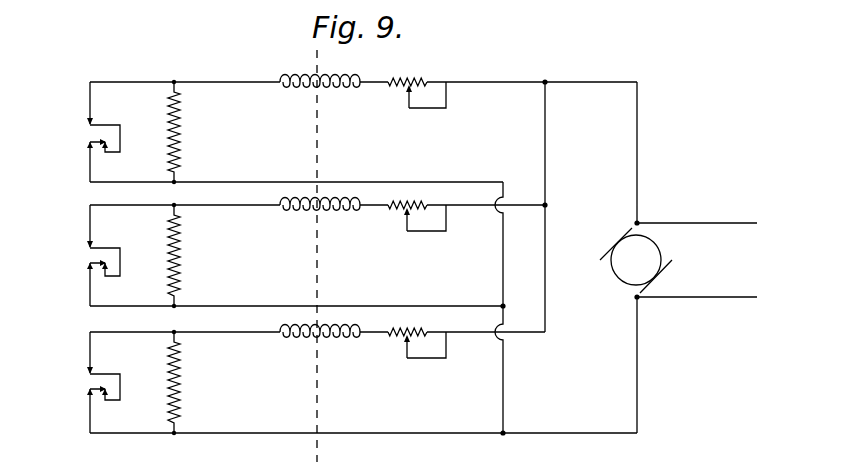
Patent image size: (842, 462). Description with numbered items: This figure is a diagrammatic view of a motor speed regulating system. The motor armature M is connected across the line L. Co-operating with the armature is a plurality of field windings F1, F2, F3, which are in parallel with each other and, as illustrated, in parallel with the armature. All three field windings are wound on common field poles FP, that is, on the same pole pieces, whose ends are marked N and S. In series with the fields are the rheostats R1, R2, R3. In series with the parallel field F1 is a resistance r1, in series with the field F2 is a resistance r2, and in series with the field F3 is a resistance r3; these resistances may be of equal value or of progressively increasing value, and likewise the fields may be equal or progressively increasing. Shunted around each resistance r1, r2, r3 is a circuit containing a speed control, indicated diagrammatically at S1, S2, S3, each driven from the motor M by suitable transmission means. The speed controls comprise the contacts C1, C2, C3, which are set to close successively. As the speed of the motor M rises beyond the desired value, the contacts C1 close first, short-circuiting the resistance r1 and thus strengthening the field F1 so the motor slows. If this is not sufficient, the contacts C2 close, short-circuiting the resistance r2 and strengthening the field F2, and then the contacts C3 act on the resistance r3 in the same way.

The speed control S1 is at (78, 132).
The speed control S2 is at (78, 255).
The speed control S3 is at (78, 382).
The contacts C1 is at (108, 147).
The contacts C2 is at (108, 268).
The contacts C3 is at (108, 395).
The resistance r1 is at (181, 142).
The resistance r2 is at (181, 256).
The resistance r3 is at (190, 382).
The field winding F1 is at (320, 97).
The field winding F2 is at (327, 215).
The field winding F3 is at (333, 342).
The rheostat R1 is at (433, 78).
The rheostat R2 is at (397, 216).
The rheostat R3 is at (396, 343).
The field poles FP is at (320, 155).
The north pole N is at (302, 60).
The south pole S is at (301, 450).
The motor armature M is at (625, 270).
The line L is at (690, 297).